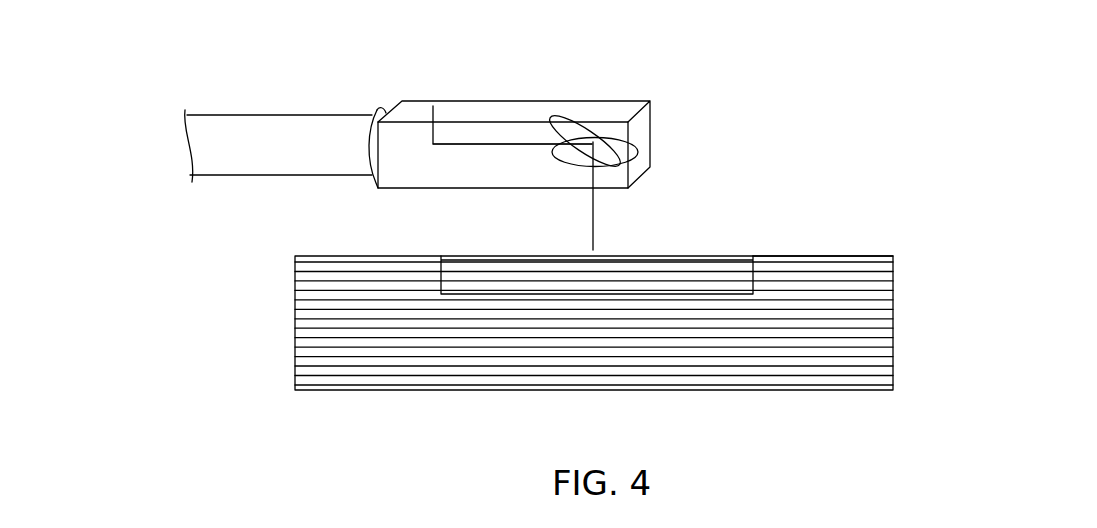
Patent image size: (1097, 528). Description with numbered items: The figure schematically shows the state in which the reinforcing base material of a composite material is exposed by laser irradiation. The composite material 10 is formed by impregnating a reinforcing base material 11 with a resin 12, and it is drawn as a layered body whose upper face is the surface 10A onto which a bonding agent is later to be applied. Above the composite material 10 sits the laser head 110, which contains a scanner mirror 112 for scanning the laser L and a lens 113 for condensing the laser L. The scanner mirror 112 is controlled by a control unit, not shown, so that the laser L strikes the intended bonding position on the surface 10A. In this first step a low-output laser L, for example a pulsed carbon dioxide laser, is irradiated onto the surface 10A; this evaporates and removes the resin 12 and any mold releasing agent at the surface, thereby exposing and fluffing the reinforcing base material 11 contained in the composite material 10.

The composite material 10 is at (594, 338).
The surface of the composite material 10A is at (725, 252).
The reinforcing base material 11 is at (657, 270).
The resin 12 is at (875, 382).
The laser head 110 is at (474, 137).
The scanner mirror 112 is at (562, 130).
The lens 113 is at (640, 150).
The laser L is at (485, 147).